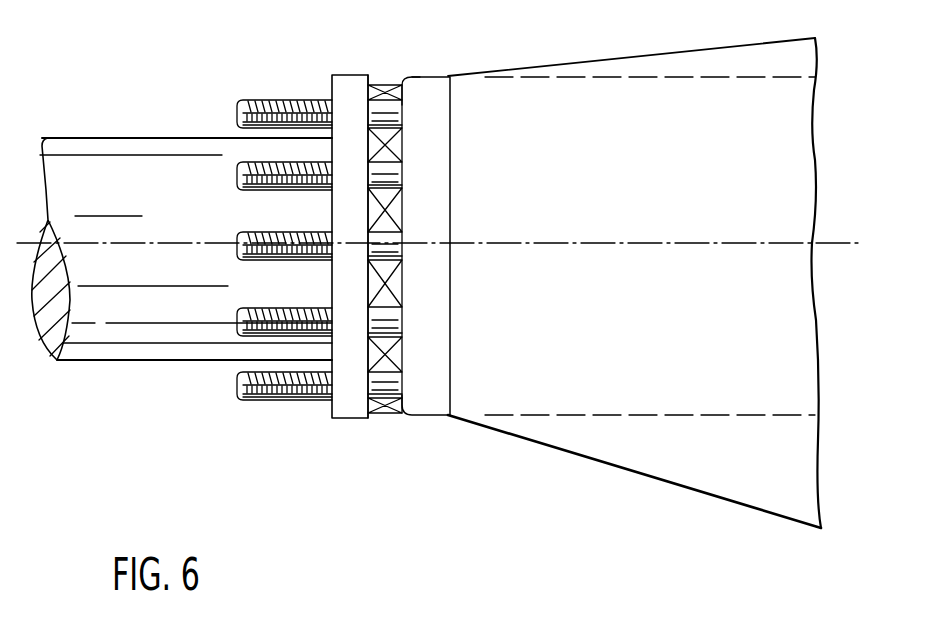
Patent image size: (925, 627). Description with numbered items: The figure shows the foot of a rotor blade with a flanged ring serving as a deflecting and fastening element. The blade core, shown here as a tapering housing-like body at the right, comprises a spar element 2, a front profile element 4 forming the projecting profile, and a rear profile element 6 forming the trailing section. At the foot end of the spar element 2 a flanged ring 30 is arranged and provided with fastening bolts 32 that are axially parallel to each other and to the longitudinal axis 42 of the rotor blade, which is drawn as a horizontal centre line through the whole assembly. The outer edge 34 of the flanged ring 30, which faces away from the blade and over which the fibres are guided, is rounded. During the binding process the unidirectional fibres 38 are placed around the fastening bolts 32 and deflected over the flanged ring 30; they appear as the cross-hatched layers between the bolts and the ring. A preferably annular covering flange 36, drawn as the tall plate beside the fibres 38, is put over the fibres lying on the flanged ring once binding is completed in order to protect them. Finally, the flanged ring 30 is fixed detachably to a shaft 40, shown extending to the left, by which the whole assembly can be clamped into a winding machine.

The spar element 2 is at (795, 378).
The front profile element 4 is at (768, 58).
The rear profile element 6 is at (706, 483).
The flanged ring 30 is at (448, 118).
The fastening bolts 32 is at (264, 180).
The outer edge 34 is at (402, 85).
The covering flange 36 is at (355, 403).
The fibres 38 is at (397, 283).
The shaft 40 is at (113, 163).
The longitudinal axis 42 is at (623, 243).